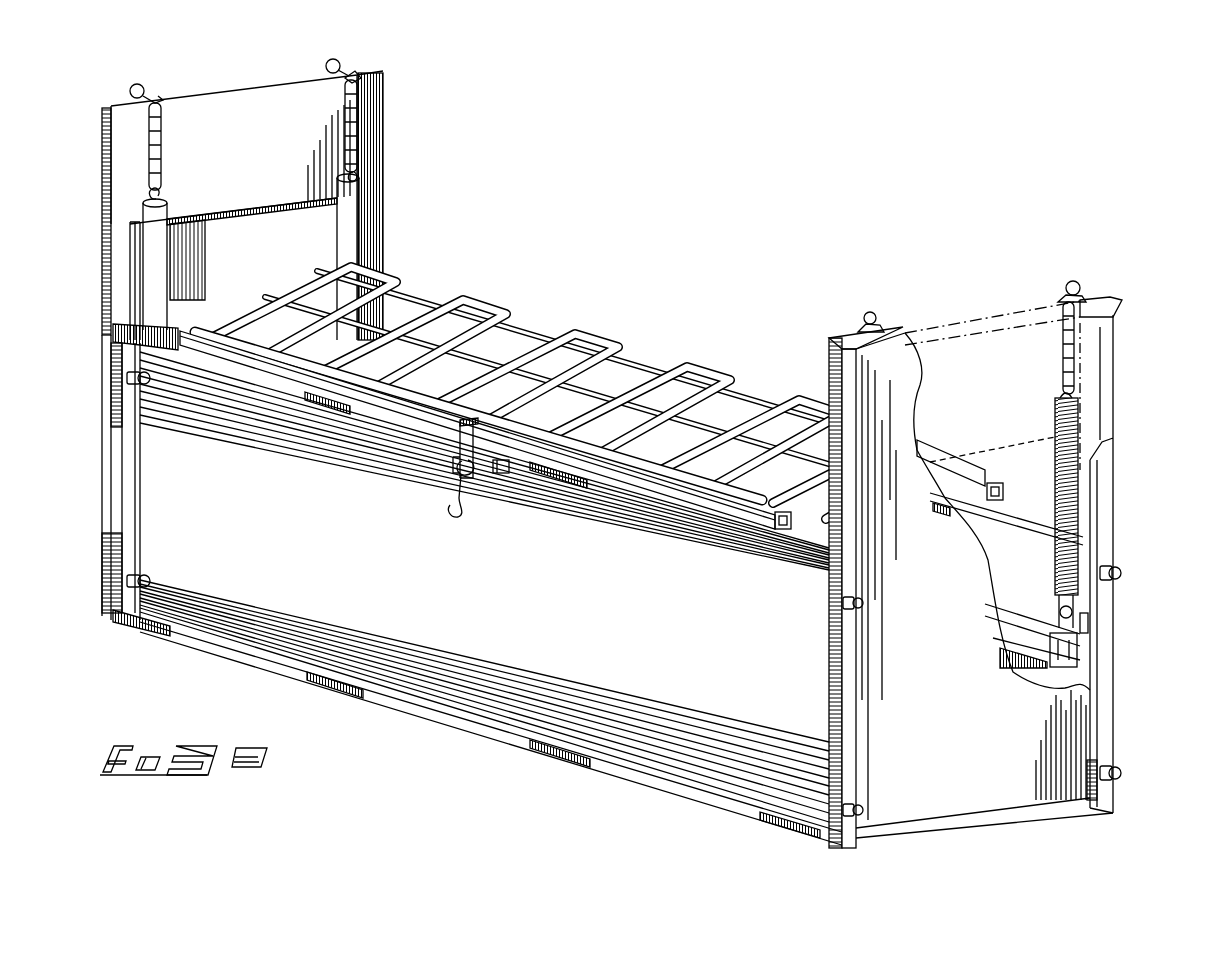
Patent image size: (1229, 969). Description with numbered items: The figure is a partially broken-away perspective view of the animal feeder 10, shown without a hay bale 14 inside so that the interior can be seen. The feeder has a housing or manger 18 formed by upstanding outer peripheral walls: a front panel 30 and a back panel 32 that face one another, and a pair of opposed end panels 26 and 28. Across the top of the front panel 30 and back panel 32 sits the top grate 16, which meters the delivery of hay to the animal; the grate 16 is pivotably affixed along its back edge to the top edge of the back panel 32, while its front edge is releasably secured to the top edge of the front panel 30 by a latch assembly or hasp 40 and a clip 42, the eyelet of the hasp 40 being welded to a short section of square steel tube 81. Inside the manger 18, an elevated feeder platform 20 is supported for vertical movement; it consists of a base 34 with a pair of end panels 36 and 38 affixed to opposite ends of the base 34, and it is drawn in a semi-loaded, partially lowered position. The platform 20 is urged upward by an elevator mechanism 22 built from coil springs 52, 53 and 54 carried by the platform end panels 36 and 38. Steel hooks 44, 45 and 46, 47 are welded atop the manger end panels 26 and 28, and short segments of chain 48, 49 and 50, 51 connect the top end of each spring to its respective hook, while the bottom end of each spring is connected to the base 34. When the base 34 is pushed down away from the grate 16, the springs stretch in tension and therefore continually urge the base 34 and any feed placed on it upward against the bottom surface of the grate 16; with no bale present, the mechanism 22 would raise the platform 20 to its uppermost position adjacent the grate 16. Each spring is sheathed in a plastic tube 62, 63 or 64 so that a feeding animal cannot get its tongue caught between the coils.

The animal feeder 10 is at (690, 172).
The hay bale 14 is at (402, 375).
The top grate 16 is at (510, 305).
The manger 18 is at (253, 576).
The elevated feeder platform 20 is at (232, 238).
The elevator mechanism 22 is at (140, 212).
The end panel 26 is at (103, 122).
The end panel 28 is at (935, 756).
The front panel 30 is at (563, 626).
The back panel 32 is at (1022, 541).
The base 34 is at (1028, 620).
The end panel 36 is at (285, 213).
The end panel 38 is at (963, 428).
The hasp 40 is at (478, 497).
The clip 42 is at (458, 517).
The steel hook 44 is at (143, 85).
The steel hook 45 is at (327, 64).
The steel hook 46 is at (1081, 292).
The steel hook 47 is at (872, 316).
The chain 48 is at (160, 160).
The chain 49 is at (355, 115).
The chain 50 is at (1062, 318).
The chain 51 is at (855, 328).
The coil spring 52 is at (163, 197).
The coil spring 53 is at (362, 172).
The coil spring 54 is at (1080, 393).
The plastic tube 62 is at (160, 292).
The plastic tube 63 is at (352, 214).
The plastic tube 64 is at (1080, 442).
The square steel tube 81 is at (476, 475).